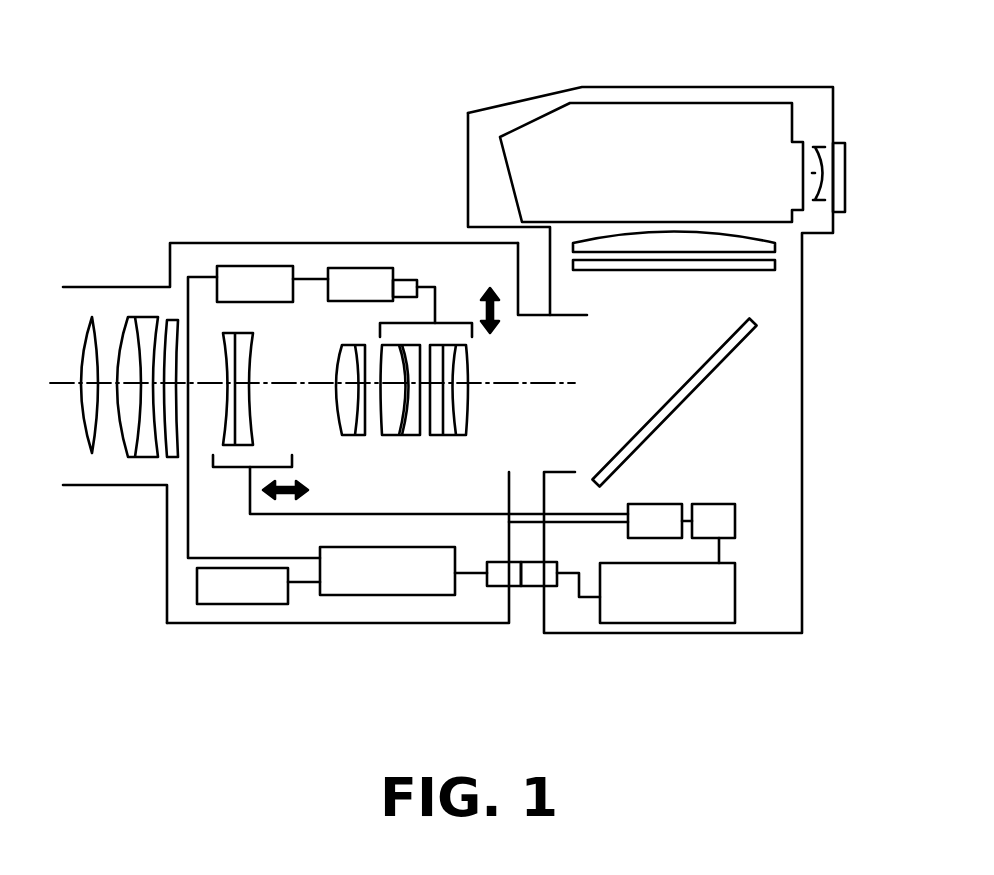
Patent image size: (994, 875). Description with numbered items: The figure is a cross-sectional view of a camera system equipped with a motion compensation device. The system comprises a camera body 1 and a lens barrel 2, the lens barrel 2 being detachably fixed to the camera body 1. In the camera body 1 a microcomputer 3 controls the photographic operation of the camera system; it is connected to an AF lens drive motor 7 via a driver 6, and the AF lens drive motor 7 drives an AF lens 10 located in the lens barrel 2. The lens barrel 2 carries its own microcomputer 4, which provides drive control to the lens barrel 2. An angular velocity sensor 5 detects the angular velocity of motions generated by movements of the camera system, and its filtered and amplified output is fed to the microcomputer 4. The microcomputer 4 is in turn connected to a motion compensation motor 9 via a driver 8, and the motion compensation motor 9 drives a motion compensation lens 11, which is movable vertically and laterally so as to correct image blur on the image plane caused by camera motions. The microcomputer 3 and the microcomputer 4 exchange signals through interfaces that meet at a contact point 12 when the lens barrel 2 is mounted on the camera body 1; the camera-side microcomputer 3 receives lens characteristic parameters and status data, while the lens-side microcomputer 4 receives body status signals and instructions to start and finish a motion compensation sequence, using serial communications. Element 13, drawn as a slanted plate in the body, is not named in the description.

The camera body 1 is at (700, 88).
The lens barrel 2 is at (133, 287).
The microcomputer 3 is at (715, 623).
The microcomputer 4 is at (390, 595).
The angular velocity sensor 5 is at (232, 604).
The driver 6 is at (722, 504).
The AF lens drive motor 7 is at (657, 504).
The driver 8 is at (275, 266).
The motion compensation motor 9 is at (370, 268).
The AF lens 10 is at (252, 382).
The motion compensation lens 11 is at (395, 440).
The contact point 12 is at (530, 586).
The main mirror 13 is at (708, 355).